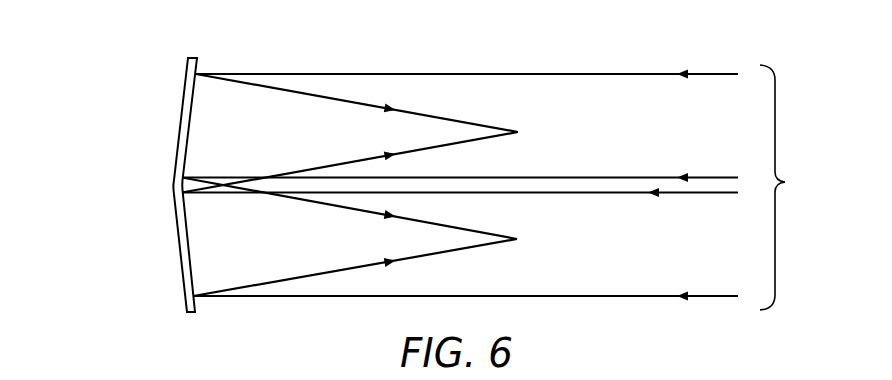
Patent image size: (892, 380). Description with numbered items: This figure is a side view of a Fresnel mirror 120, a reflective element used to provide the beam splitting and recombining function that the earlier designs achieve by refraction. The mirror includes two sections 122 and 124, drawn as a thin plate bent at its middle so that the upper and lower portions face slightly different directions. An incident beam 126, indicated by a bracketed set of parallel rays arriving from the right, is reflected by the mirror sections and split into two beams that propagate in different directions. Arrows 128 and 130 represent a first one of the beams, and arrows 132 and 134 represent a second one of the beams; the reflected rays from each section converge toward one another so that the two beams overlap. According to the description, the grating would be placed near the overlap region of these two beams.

The Fresnel mirror 120 is at (124, 182).
The mirror section 122 is at (177, 153).
The mirror section 124 is at (178, 250).
The incident beam 126 is at (502, 187).
The arrow 128 is at (443, 118).
The arrow 130 is at (473, 231).
The arrow 132 is at (473, 247).
The arrow 134 is at (477, 139).